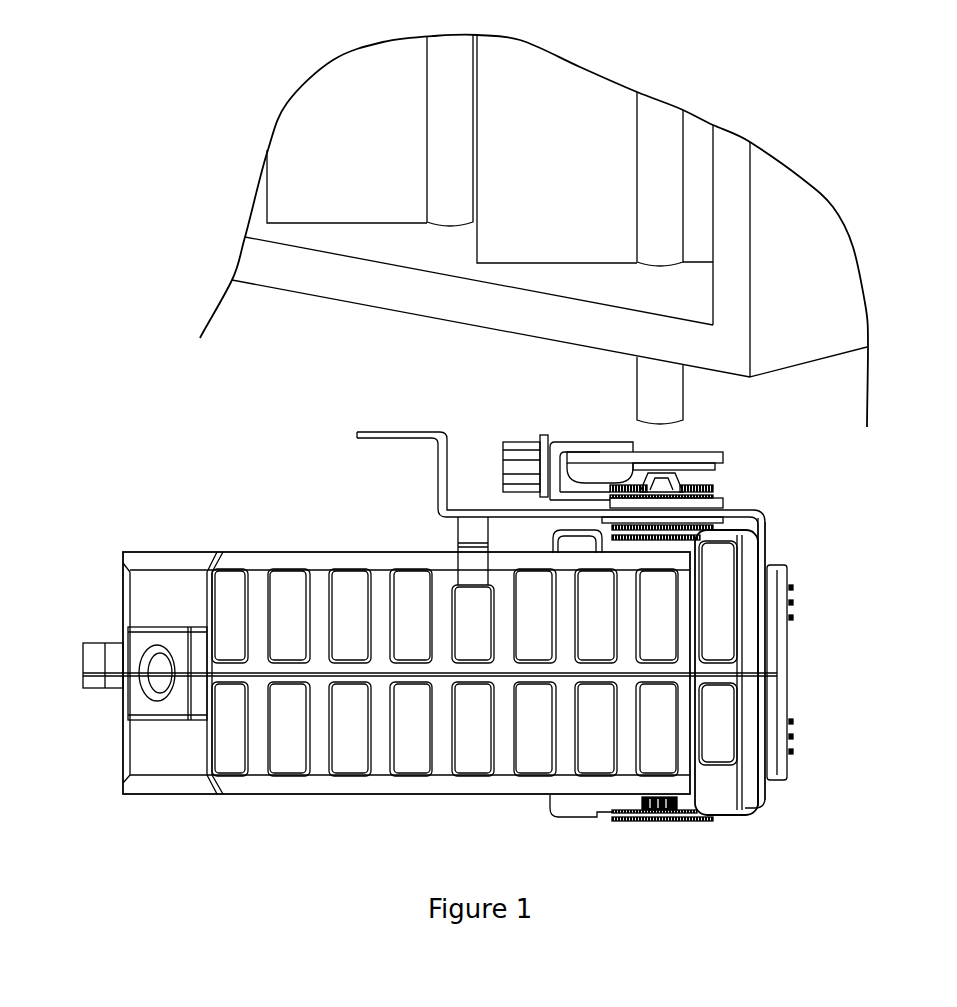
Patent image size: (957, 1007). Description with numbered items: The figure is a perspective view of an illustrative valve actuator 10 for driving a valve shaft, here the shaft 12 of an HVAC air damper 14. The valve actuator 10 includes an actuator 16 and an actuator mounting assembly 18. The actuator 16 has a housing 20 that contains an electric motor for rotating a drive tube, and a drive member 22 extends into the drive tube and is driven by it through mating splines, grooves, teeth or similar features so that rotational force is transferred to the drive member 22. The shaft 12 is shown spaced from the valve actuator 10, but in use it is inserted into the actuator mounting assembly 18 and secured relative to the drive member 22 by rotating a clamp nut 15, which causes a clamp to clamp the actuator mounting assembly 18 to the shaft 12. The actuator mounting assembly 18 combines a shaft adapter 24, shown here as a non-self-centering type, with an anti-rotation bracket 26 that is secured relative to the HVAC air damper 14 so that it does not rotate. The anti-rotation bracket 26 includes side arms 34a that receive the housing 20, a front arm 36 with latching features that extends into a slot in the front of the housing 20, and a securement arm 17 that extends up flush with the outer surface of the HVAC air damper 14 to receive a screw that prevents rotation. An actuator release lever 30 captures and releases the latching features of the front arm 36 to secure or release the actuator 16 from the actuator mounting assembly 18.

The valve actuator 10 is at (468, 375).
The shaft 12 is at (645, 392).
The HVAC air damper 14 is at (812, 242).
The clamp nut 15 is at (523, 442).
The actuator 16 is at (430, 658).
The securement arm 17 is at (408, 440).
The actuator mounting assembly 18 is at (750, 479).
The housing 20 is at (262, 763).
The drive member 22 is at (725, 528).
The shaft adapter 24 is at (743, 448).
The anti-rotation bracket 26 is at (551, 592).
The actuator release lever 30 is at (790, 673).
The side arms 34a is at (472, 567).
The front arm 36 is at (762, 541).